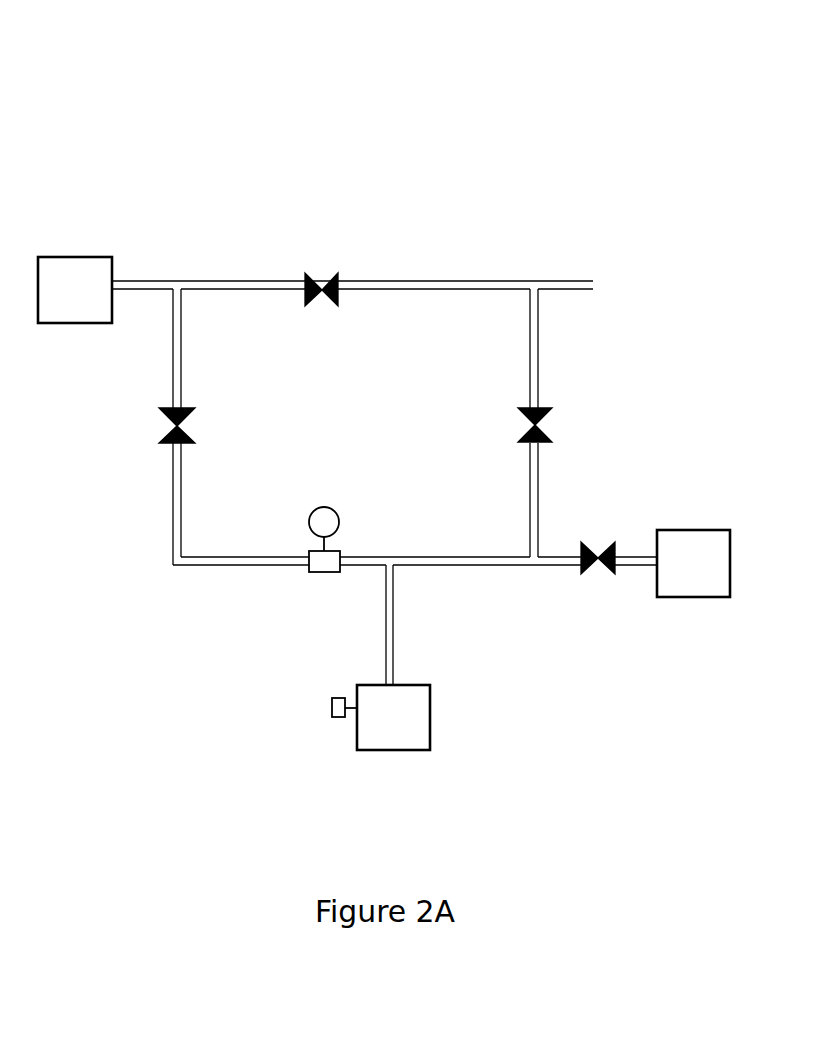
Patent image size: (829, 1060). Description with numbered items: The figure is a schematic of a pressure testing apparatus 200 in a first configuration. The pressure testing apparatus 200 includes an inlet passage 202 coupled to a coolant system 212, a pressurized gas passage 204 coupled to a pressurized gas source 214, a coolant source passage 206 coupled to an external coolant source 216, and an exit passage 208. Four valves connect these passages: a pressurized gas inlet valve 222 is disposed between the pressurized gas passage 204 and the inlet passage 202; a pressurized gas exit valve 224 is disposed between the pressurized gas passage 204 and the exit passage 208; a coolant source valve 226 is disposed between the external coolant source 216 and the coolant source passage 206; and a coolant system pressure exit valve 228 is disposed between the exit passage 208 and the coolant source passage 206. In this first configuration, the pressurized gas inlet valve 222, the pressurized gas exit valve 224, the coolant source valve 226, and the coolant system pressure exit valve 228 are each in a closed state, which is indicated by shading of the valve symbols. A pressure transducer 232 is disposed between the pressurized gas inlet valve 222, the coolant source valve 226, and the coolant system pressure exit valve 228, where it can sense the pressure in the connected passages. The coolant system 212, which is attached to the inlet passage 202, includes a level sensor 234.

The pressure testing apparatus 200 is at (109, 108).
The inlet passage 202 is at (171, 576).
The pressurized gas passage 204 is at (174, 276).
The coolant source passage 206 is at (519, 586).
The exit passage 208 is at (531, 267).
The coolant system 212 is at (393, 717).
The pressurized gas source 214 is at (75, 290).
The external coolant source 216 is at (693, 563).
The pressurized gas inlet valve 222 is at (161, 425).
The pressurized gas exit valve 224 is at (321, 276).
The coolant source valve 226 is at (598, 571).
The coolant system pressure exit valve 228 is at (552, 425).
The pressure transducer 232 is at (342, 539).
The level sensor 234 is at (337, 710).